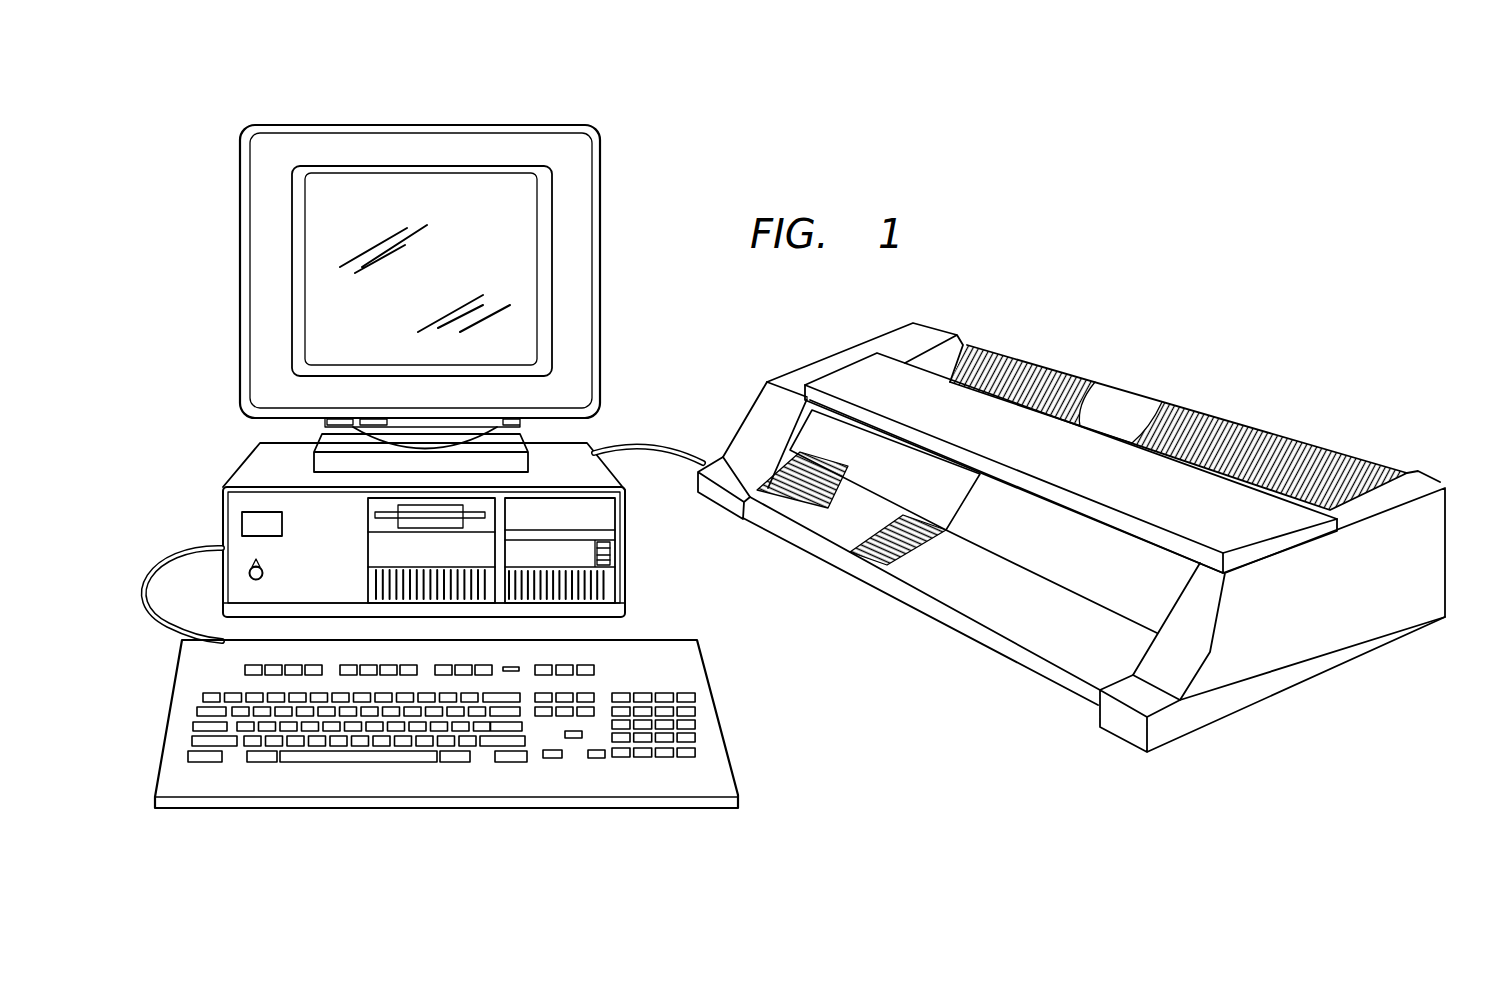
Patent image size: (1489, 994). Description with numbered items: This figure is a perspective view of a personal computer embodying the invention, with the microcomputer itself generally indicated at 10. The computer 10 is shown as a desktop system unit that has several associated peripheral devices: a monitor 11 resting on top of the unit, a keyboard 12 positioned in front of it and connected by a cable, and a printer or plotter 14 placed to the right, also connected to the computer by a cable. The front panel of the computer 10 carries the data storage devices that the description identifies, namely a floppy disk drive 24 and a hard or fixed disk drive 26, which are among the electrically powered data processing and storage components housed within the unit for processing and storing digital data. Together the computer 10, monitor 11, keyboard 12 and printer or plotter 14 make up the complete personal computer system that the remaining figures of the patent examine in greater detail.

The microcomputer 10 is at (423, 532).
The monitor 11 is at (303, 109).
The keyboard 12 is at (243, 820).
The printer or plotter 14 is at (1150, 385).
The floppy disk drive 24 is at (375, 513).
The hard or fixed disk drive 26 is at (378, 550).